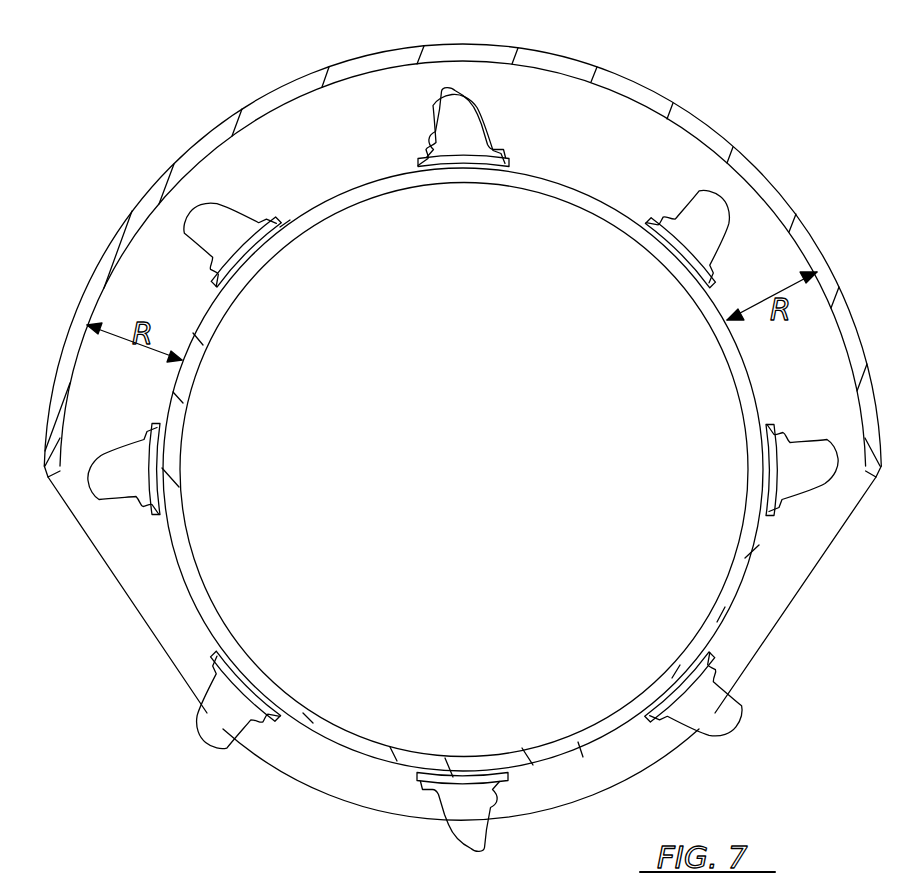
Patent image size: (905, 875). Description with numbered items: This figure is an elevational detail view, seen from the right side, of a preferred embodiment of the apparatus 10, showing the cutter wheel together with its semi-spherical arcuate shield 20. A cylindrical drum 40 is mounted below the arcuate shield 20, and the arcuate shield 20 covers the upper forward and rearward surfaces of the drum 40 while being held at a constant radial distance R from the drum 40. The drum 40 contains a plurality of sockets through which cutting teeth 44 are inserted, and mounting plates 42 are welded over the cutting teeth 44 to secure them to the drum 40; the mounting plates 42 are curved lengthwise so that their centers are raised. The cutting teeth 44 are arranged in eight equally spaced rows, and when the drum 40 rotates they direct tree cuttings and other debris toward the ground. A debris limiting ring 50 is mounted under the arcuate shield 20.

The apparatus 10 is at (255, 90).
The semi-spherical arcuate shield 20 is at (765, 172).
The cylindrical drum 40 is at (759, 547).
The mounting plates 42 is at (714, 646).
The cutting teeth 44 is at (722, 735).
The debris limiting ring 50 is at (146, 618).